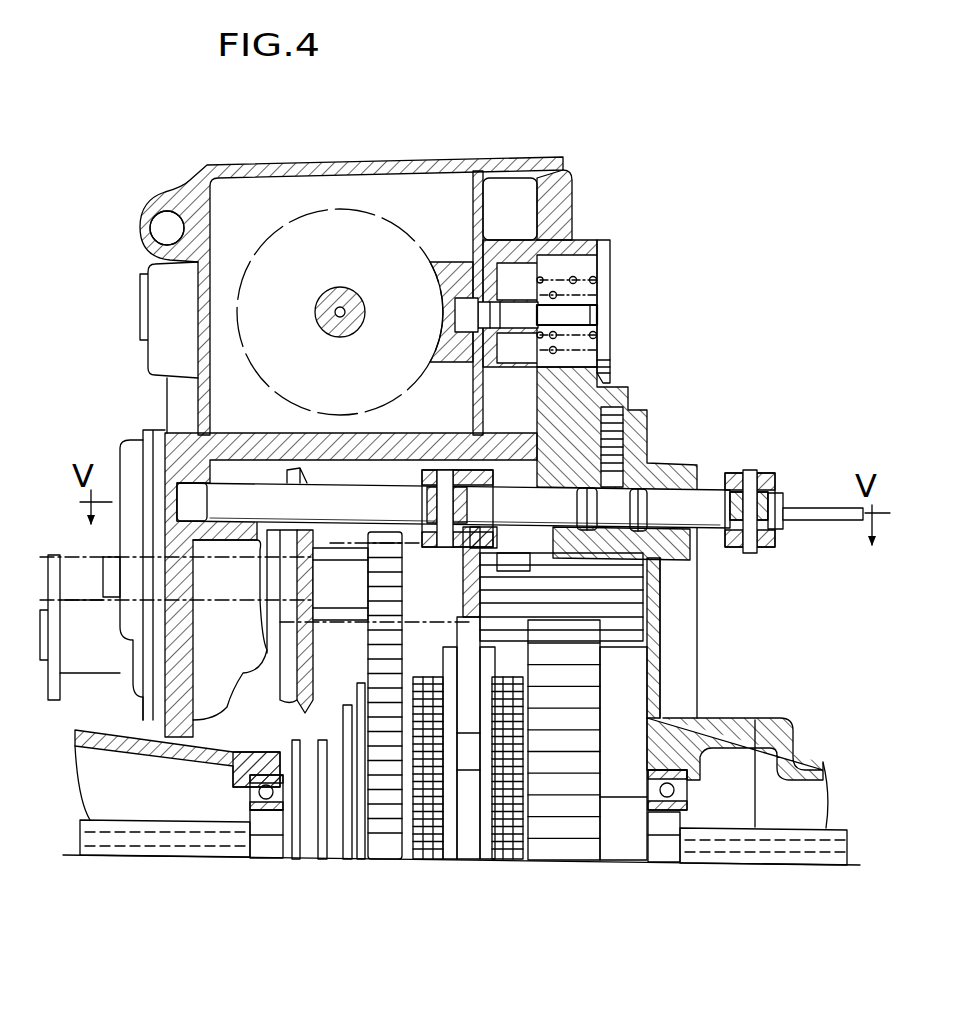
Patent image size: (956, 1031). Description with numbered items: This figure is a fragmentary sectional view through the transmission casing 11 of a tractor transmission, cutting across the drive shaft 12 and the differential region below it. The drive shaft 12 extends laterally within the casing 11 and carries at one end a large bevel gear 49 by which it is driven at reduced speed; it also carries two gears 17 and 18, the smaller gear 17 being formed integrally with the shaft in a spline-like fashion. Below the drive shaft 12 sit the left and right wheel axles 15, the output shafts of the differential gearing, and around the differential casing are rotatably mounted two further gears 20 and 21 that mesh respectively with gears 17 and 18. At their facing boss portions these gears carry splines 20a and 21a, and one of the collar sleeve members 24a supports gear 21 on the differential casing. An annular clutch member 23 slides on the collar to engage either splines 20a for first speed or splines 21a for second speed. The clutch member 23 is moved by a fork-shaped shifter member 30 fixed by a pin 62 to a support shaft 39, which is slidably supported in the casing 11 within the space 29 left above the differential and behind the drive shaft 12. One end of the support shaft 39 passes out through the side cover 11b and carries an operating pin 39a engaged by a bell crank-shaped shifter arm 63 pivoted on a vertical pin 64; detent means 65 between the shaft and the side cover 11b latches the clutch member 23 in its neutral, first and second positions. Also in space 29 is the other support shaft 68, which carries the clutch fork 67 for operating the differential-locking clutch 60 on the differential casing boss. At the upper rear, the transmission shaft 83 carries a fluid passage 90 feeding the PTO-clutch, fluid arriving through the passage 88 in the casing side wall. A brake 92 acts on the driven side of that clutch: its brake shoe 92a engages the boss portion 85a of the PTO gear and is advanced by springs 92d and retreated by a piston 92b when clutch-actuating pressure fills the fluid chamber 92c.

The transmission casing 11 is at (203, 393).
The side cover 11b is at (563, 407).
The drive shaft 12 is at (512, 553).
The wheel axles 15 is at (125, 835).
The gear 17 is at (570, 600).
The gear 18 is at (385, 550).
The gear 20 is at (570, 727).
The splines 20a is at (582, 868).
The gear 21 is at (388, 830).
The splines 21a is at (421, 835).
The clutch member 23 is at (447, 845).
The sleeve member 24a is at (497, 862).
The space 29 is at (327, 473).
The shifter member 30 is at (468, 660).
The support shaft 39 is at (390, 497).
The operating pin 39a is at (750, 470).
The large bevel gear 49 is at (295, 685).
The differential-locking clutch 60 is at (310, 828).
The pin 62 is at (443, 487).
The shifter arm 63 is at (765, 549).
The vertical pin 64 is at (820, 522).
The detent means 65 is at (640, 458).
The clutch fork 67 is at (293, 717).
The support shaft 68 is at (258, 600).
The transmission shaft 83 is at (341, 296).
The boss portion 85a is at (392, 163).
The fluid passage 88 is at (168, 222).
The fluid passage 90 is at (340, 328).
The brake 92 is at (443, 262).
The brake shoe 92a is at (507, 272).
The piston 92b is at (587, 353).
The fluid chamber 92c is at (540, 257).
The springs 92d is at (597, 310).